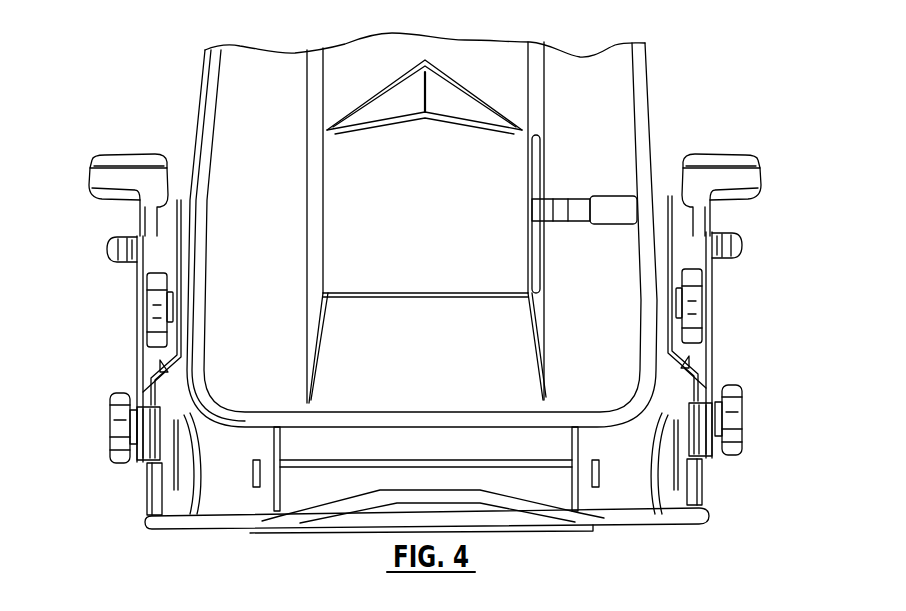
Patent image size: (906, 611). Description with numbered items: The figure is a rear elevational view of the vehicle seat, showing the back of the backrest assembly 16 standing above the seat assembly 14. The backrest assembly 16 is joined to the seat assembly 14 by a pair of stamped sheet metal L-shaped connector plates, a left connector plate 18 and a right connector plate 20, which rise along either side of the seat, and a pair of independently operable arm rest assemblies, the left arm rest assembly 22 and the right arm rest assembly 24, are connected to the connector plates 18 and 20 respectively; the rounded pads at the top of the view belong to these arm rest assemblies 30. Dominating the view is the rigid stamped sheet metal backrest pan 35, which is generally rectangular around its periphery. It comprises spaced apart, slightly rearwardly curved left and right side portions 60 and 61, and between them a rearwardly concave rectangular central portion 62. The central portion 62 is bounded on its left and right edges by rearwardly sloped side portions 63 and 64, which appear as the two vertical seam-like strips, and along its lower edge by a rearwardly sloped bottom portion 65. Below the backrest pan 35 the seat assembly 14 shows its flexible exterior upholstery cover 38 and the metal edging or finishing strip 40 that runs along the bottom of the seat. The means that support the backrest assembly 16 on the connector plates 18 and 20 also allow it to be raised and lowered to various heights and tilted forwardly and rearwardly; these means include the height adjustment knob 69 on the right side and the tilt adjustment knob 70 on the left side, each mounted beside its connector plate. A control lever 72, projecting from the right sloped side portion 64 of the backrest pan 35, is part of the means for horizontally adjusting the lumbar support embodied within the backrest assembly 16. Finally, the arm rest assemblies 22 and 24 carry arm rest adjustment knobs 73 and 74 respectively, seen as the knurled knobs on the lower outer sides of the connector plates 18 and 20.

The seat assembly 14 is at (674, 487).
The backrest assembly 16 is at (652, 86).
The left connector plate 18 is at (150, 353).
The right connector plate 20 is at (700, 350).
The left arm rest assembly 22 is at (128, 287).
The right arm rest assembly 24 is at (722, 277).
The headrest 30 is at (131, 152).
The backrest pan 35 is at (612, 63).
The exterior upholstery cover 38 is at (148, 483).
The edging strip 40 is at (710, 515).
The left side portion 60 is at (263, 194).
The right side portion 61 is at (605, 134).
The central portion 62 is at (440, 165).
The left sloped side portion 63 is at (315, 118).
The right sloped side portion 64 is at (533, 108).
The bottom portion 65 is at (432, 339).
The height adjustment knob 69 is at (703, 318).
The tilt adjustment knob 70 is at (150, 320).
The control lever 72 is at (566, 200).
The left arm rest adjustment knob 73 is at (110, 427).
The right arm rest adjustment knob 74 is at (743, 412).